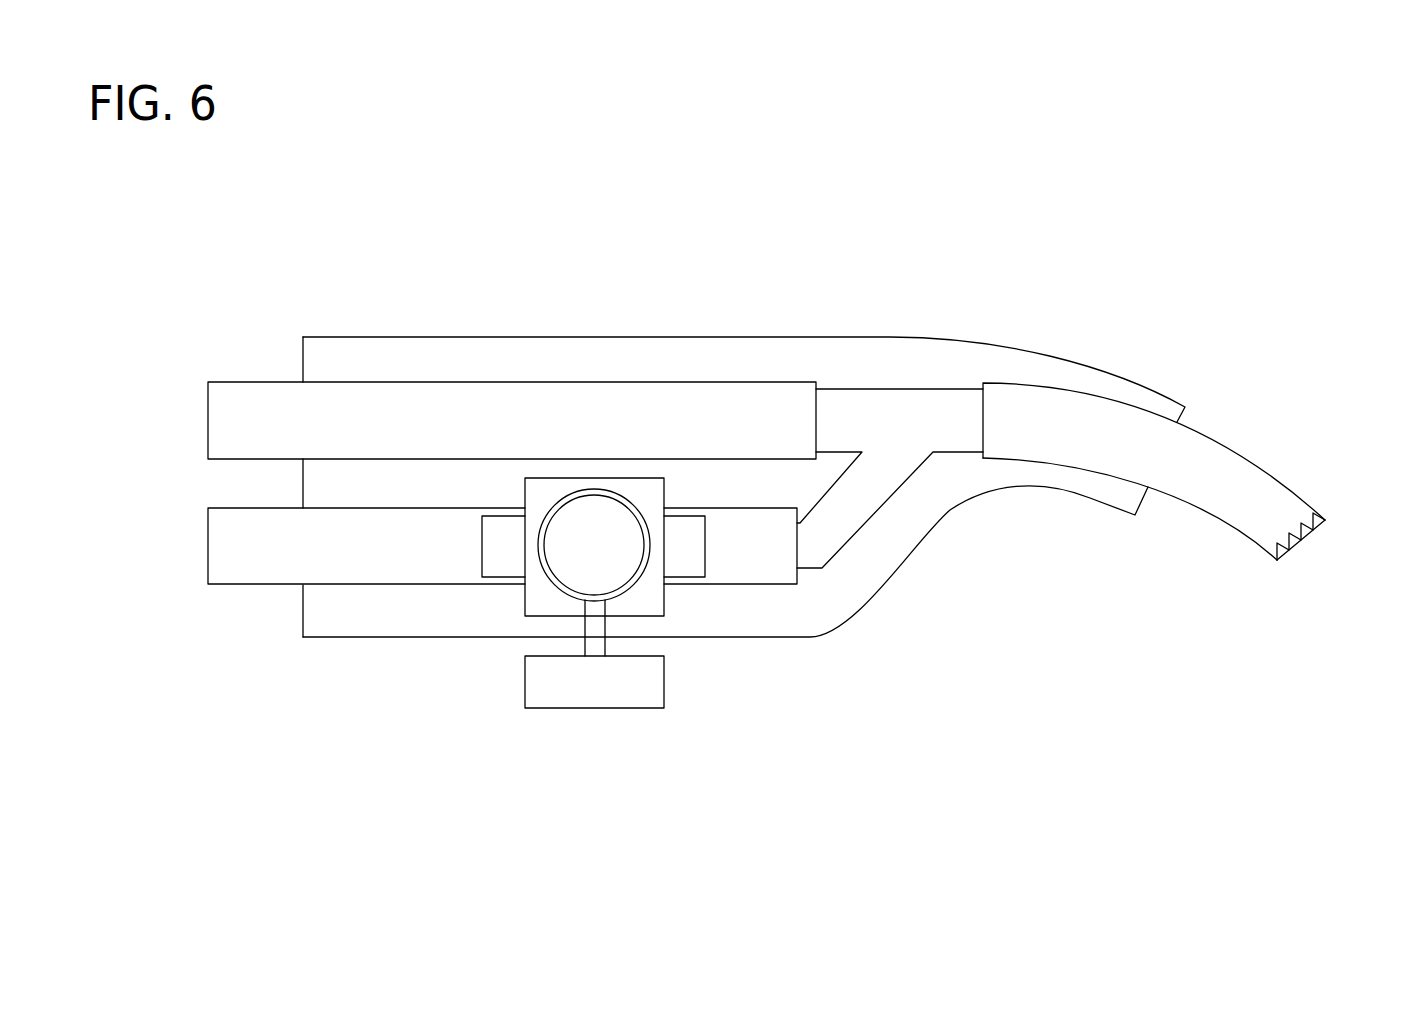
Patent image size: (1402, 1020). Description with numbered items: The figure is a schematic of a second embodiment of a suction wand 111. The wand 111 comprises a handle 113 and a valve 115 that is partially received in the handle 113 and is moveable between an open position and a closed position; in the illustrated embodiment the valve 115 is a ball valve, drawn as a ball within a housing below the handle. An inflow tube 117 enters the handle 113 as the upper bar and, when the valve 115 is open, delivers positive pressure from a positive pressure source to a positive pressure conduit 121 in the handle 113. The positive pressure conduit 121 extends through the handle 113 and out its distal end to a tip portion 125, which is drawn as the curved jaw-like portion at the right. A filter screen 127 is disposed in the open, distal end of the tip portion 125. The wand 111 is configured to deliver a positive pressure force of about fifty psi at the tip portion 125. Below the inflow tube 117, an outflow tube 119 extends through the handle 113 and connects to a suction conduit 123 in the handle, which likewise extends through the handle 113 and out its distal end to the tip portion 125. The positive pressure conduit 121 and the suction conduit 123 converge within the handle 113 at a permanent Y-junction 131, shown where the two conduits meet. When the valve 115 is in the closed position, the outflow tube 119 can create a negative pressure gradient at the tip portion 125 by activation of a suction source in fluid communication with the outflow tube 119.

The suction wand 111 is at (1140, 222).
The handle 113 is at (408, 358).
The valve 115 is at (545, 716).
The inflow tube 117 is at (248, 405).
The outflow tube 119 is at (247, 565).
The positive pressure conduit 121 is at (855, 407).
The suction conduit 123 is at (855, 510).
The tip portion 125 is at (1249, 485).
The filter screen 127 is at (1297, 542).
The Y-junction 131 is at (922, 425).